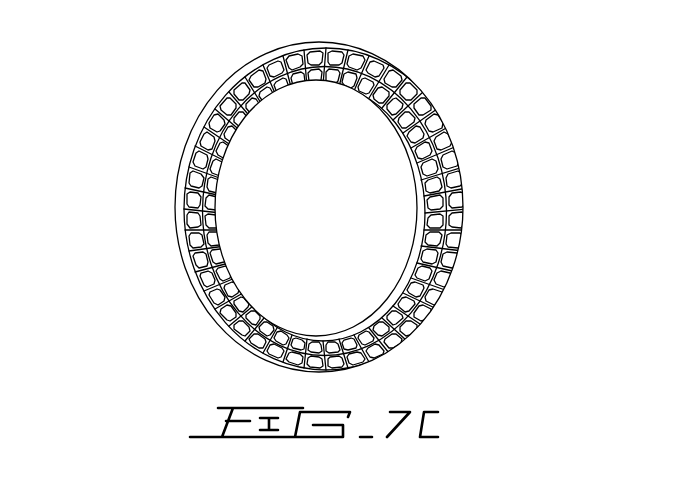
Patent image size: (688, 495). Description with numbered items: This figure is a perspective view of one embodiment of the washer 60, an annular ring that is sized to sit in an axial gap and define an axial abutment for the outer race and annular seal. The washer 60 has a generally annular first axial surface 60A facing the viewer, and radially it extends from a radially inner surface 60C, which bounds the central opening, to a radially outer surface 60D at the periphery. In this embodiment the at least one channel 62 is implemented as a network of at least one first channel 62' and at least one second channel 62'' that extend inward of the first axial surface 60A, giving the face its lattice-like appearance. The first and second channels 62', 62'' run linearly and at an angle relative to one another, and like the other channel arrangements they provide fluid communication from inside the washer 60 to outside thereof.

The washer 60 is at (138, 102).
The first axial surface 60A is at (398, 209).
The radially inner surface 60C is at (425, 252).
The radially outer surface 60D is at (178, 189).
The channel 62 is at (398, 209).
The first channel 62' is at (367, 209).
The second channel 62'' is at (368, 209).